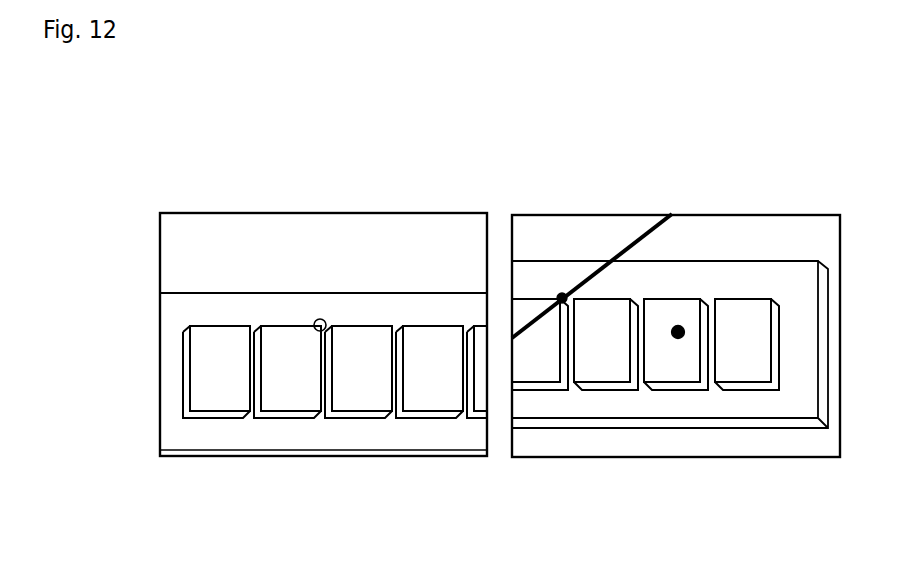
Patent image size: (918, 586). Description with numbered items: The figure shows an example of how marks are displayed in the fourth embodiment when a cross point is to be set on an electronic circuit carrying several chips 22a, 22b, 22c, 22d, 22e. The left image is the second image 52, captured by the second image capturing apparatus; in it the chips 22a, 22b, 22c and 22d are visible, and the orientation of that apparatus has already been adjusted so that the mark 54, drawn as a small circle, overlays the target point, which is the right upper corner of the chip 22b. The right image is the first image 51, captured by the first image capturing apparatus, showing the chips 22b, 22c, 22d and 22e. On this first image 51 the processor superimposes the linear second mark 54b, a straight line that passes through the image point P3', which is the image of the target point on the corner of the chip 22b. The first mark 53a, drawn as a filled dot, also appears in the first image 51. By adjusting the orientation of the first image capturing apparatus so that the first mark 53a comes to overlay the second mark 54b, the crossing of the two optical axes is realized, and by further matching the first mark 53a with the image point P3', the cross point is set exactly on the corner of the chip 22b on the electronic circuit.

The first image 51 is at (755, 215).
The second image 52 is at (363, 213).
The mark 54 is at (319, 319).
The second mark 54b is at (617, 252).
The first mark 53a is at (678, 326).
The image point P3' is at (548, 288).
The chip 22a is at (233, 400).
The chip 22b is at (298, 400).
The chip 22c is at (367, 400).
The chip 22d is at (435, 400).
The chip 22e is at (741, 378).